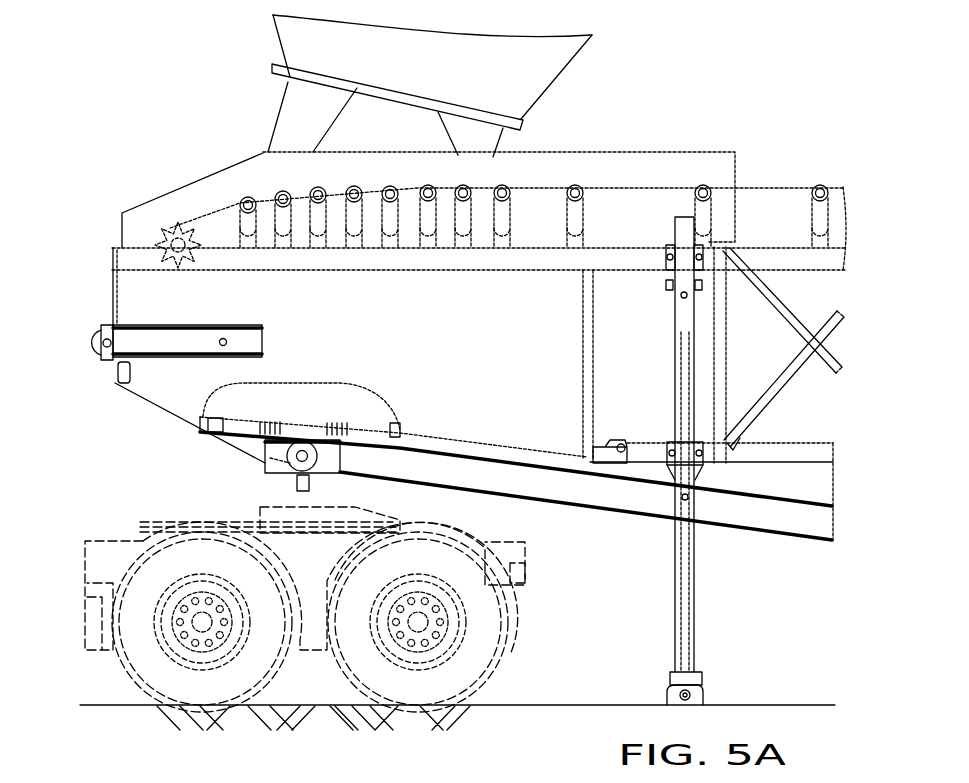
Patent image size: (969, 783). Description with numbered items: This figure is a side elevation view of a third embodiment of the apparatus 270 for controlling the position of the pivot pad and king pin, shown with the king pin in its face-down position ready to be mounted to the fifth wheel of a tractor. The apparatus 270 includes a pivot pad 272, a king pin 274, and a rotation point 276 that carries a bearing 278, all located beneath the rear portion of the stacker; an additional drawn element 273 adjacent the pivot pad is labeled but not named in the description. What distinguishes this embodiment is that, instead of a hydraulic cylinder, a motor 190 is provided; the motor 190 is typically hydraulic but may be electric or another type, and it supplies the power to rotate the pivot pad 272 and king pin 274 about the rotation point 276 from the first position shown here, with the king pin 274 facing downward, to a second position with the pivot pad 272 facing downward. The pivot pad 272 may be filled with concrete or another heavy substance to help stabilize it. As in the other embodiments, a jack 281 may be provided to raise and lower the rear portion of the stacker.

The motor 190 is at (398, 448).
The apparatus for controlling the position of the pivot pad and king pin 270 is at (487, 431).
The pivot pad 272 is at (328, 422).
The cover 273 is at (253, 425).
The king pin 274 is at (310, 486).
The rotation point 276 is at (294, 468).
The bearing 278 is at (302, 455).
The jack 281 is at (688, 565).